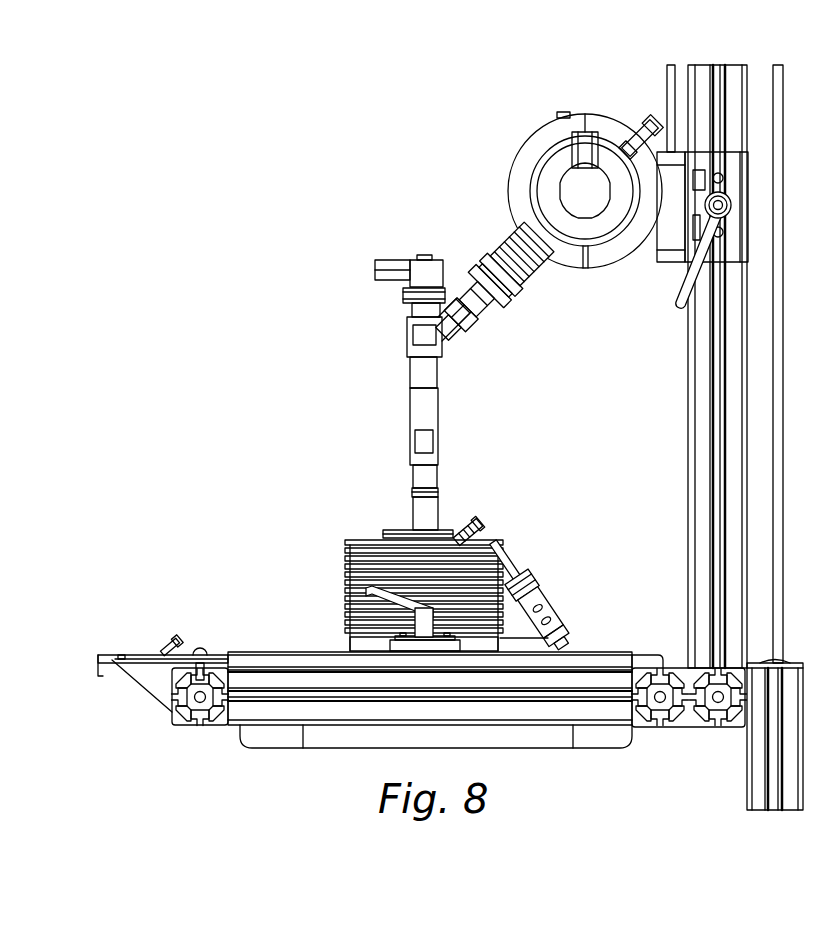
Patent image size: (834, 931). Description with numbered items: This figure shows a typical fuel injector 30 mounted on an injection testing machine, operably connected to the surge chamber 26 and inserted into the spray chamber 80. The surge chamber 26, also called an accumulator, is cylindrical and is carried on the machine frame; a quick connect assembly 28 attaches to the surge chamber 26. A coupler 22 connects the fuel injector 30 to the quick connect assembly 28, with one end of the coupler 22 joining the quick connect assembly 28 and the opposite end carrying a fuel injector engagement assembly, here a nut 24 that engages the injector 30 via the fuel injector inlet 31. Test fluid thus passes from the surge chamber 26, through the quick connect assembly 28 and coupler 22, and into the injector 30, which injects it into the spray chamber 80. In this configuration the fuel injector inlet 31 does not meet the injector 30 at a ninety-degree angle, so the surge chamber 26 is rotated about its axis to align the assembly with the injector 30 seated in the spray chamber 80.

The coupler 22 is at (495, 280).
The nut 24 is at (476, 299).
The surge chamber 26 is at (512, 172).
The quick connect assembly 28 is at (662, 384).
The fuel injector 30 is at (410, 406).
The fuel injector inlet 31 is at (461, 315).
The spray chamber 80 is at (357, 539).